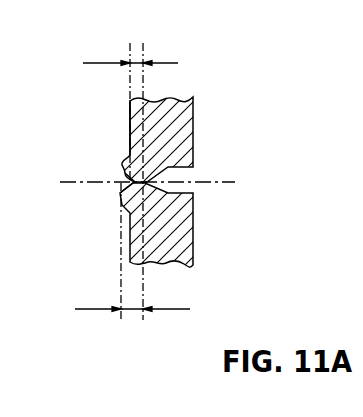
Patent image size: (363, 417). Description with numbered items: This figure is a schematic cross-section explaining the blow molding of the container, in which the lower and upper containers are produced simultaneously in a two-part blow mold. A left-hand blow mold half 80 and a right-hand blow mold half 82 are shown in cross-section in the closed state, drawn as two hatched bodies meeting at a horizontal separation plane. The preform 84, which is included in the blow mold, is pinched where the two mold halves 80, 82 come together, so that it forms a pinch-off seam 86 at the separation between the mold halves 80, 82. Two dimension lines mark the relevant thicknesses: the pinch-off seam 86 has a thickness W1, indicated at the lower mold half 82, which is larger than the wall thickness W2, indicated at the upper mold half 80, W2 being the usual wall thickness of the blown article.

The left-hand blow mold half 80 is at (186, 135).
The right-hand blow mold half 82 is at (186, 226).
The preform 84 is at (137, 124).
The pinch-off seam 86 is at (116, 187).
The wall thickness W2 is at (134, 63).
The thickness of the pinch-off seam W1 is at (132, 310).